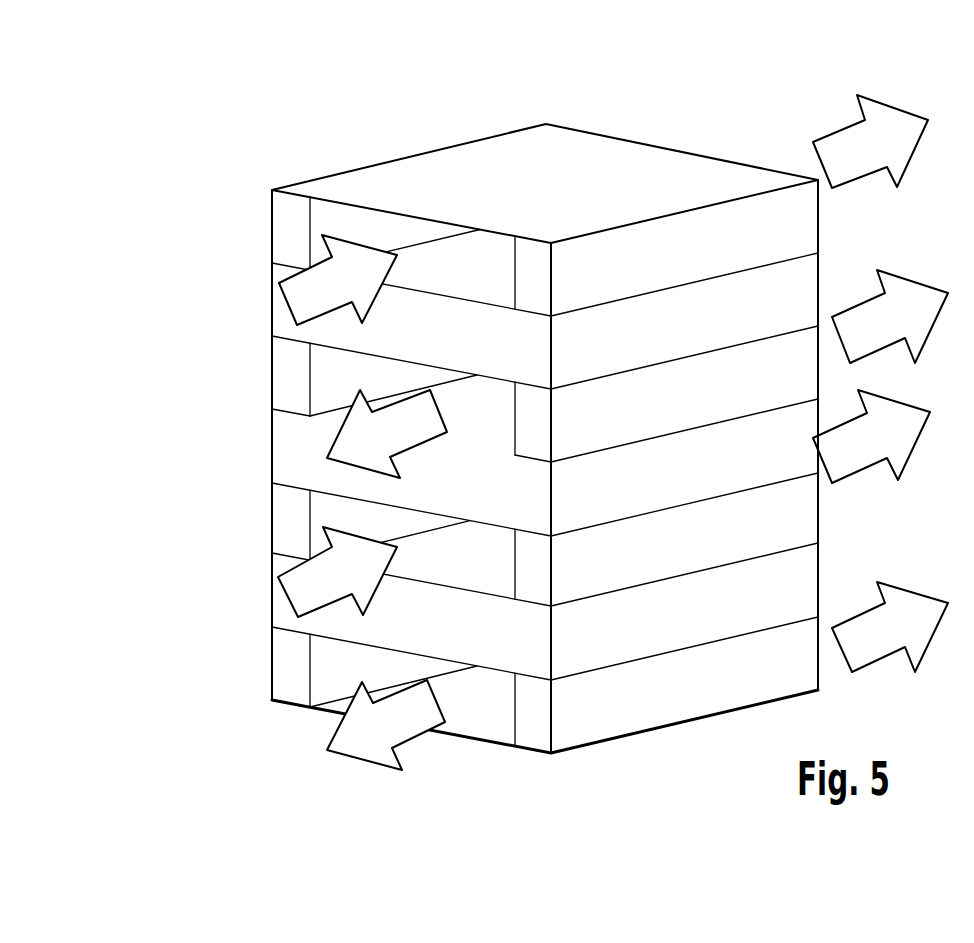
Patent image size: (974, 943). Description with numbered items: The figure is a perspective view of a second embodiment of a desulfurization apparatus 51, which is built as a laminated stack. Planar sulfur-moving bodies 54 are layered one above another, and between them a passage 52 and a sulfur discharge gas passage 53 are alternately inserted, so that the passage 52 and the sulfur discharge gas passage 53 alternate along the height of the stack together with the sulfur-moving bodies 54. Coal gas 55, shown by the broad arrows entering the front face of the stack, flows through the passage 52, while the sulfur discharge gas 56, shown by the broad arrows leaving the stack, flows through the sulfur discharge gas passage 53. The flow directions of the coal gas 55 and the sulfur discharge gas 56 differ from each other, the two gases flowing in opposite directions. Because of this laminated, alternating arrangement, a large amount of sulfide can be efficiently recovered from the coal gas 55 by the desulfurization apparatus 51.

The desulfurization apparatus 51 is at (491, 417).
The passage 52 is at (282, 222).
The sulfur discharge gas passage 53 is at (285, 376).
The sulfur-moving body 54 is at (284, 330).
The coal gas 55 is at (290, 293).
The sulfur discharge gas 56 is at (346, 441).